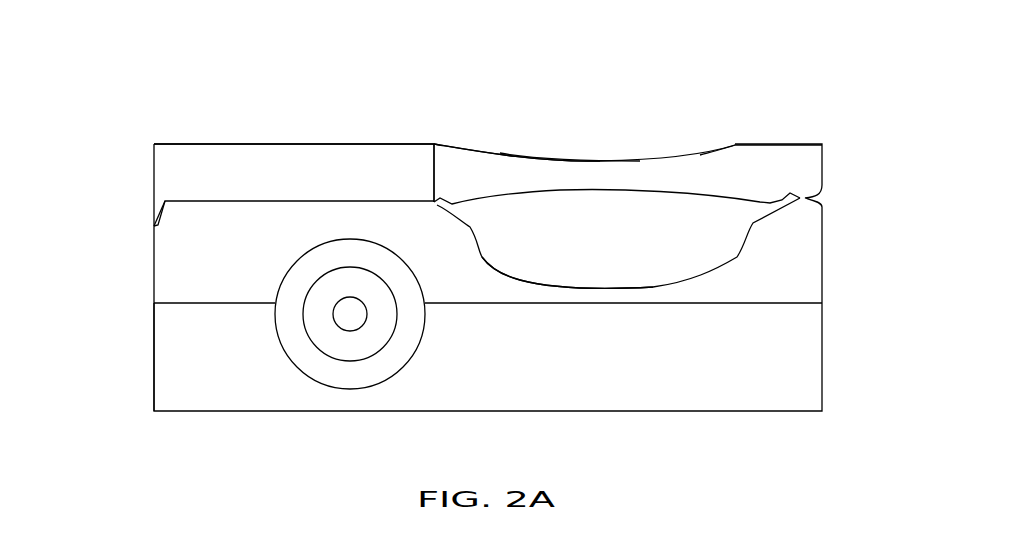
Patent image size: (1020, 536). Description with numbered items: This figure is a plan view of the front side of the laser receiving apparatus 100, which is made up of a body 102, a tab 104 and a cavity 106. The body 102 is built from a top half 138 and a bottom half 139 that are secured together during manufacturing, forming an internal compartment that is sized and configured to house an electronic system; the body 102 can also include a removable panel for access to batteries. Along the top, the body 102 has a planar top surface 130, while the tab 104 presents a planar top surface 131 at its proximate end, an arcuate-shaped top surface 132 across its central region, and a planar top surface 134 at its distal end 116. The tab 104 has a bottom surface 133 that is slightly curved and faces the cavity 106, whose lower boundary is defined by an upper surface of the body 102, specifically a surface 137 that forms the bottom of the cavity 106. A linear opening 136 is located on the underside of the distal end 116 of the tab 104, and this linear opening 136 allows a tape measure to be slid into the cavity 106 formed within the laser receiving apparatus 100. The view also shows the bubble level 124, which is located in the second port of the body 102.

The laser receiving apparatus 100 is at (157, 97).
The body 102 is at (88, 141).
The tab 104 is at (857, 58).
The cavity 106 is at (710, 228).
The distal end 116 is at (468, 172).
The bubble level 124 is at (338, 375).
The planar top surface 130 is at (258, 140).
The planar top surface 131 is at (463, 138).
The arcuate-shaped top surface 132 is at (610, 155).
The bottom surface 133 is at (537, 202).
The planar top surface 134 is at (750, 138).
The linear opening 136 is at (818, 193).
The surface 137 is at (683, 277).
The top half 138 is at (173, 258).
The bottom half 139 is at (173, 345).